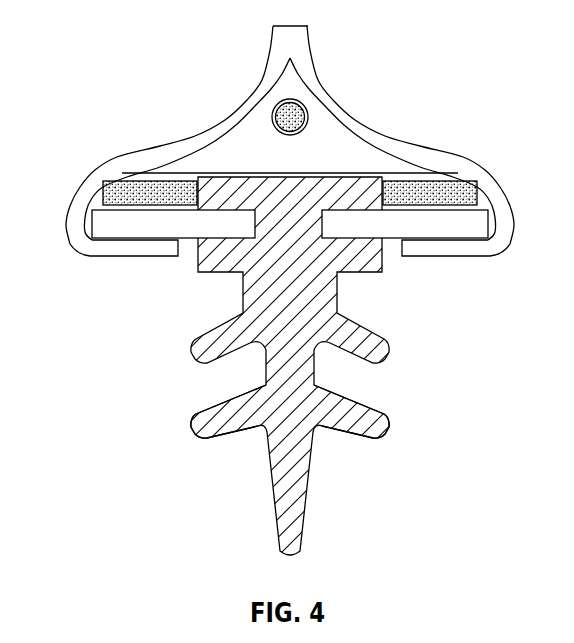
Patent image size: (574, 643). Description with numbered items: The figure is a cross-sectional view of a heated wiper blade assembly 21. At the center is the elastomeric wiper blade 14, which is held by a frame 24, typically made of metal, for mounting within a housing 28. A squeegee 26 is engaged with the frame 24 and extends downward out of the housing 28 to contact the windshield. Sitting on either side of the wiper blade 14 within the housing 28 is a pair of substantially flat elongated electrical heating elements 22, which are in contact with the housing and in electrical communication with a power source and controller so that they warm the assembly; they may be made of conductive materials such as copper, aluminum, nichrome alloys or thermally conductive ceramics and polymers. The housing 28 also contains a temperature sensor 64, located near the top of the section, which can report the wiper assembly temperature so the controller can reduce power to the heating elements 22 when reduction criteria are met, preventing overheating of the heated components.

The heated wiper blade assembly 21 is at (287, 300).
The temperature sensor 64 is at (289, 100).
The housing 28 is at (333, 108).
The electrical heating element 22 is at (103, 188).
The frame 24 is at (453, 232).
The wiper blade 14 is at (293, 268).
The squeegee 26 is at (358, 423).